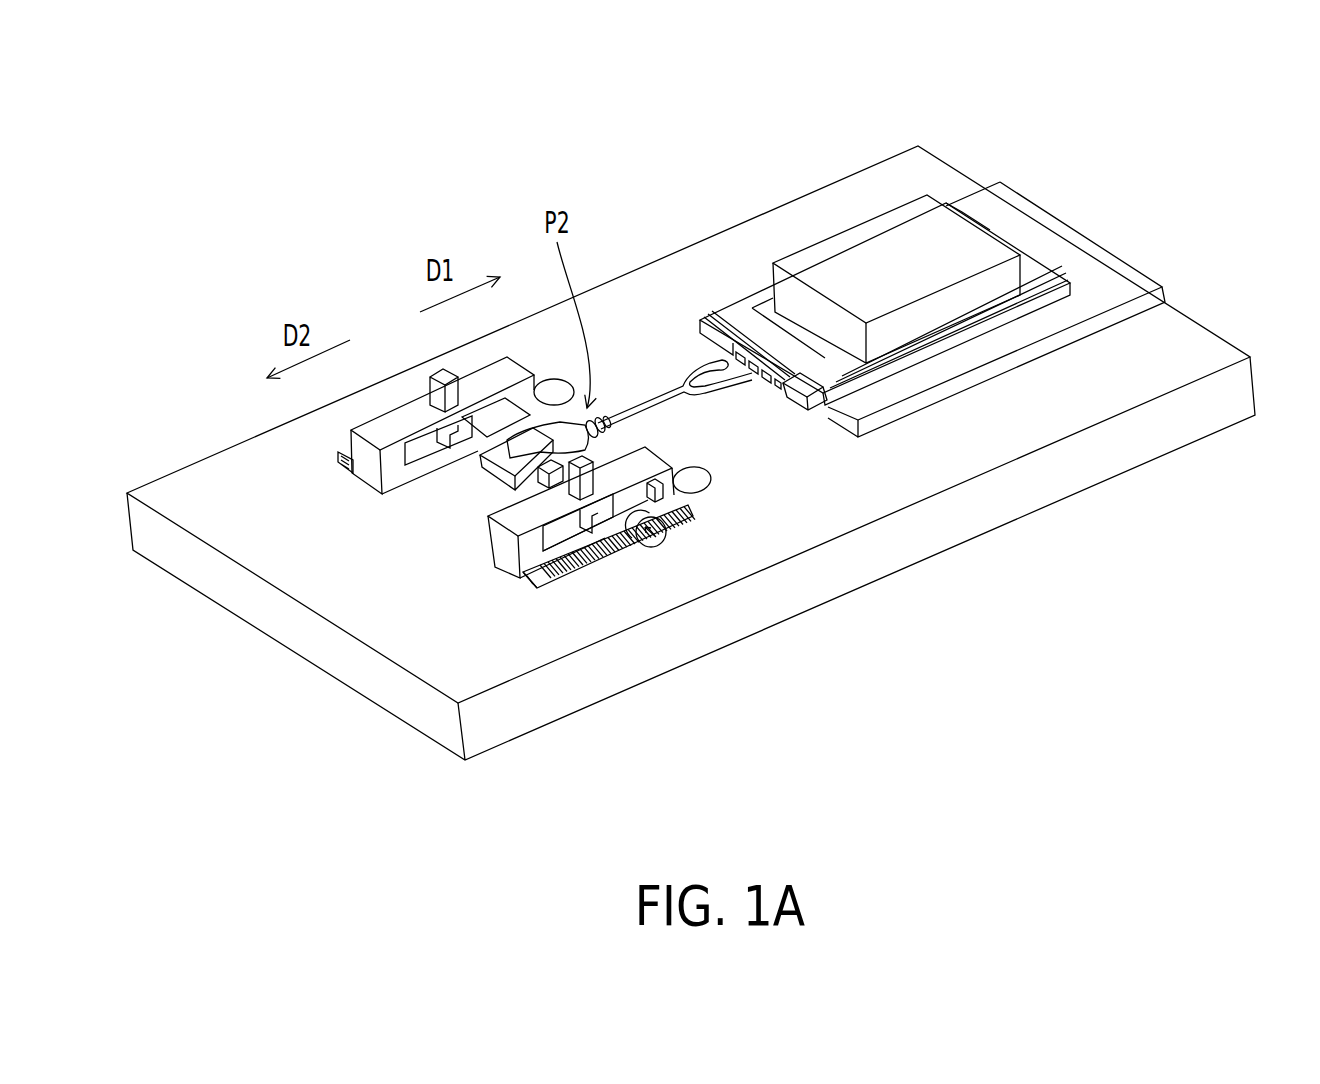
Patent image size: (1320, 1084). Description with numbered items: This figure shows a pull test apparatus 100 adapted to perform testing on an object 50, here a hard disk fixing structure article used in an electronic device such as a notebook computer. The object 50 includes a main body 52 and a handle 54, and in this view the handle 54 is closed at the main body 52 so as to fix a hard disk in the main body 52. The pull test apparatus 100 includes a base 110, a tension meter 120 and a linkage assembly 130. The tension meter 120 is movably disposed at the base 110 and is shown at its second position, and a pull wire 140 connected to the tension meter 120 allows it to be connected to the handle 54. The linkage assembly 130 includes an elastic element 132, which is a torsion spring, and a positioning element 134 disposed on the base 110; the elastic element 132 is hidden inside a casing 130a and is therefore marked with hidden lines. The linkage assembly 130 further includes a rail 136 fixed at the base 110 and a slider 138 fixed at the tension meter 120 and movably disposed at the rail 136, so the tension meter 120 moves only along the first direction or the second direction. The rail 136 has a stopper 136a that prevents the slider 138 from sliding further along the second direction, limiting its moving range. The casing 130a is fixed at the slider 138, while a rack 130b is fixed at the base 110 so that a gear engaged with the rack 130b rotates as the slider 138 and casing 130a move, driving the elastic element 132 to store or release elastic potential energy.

The object 50 is at (885, 251).
The main body 52 is at (743, 323).
The handle 54 is at (797, 393).
The pull test apparatus 100 is at (1272, 748).
The base 110 is at (1052, 487).
The tension meter 120 is at (548, 458).
The linkage assembly 130 is at (579, 579).
The casing 130a is at (646, 545).
The rack 130b is at (618, 557).
The elastic element 132 is at (664, 537).
The positioning element 134 is at (692, 480).
The rail 136 is at (562, 545).
The stopper 136a is at (640, 468).
The slider 138 is at (627, 500).
The pull wire 140 is at (647, 412).